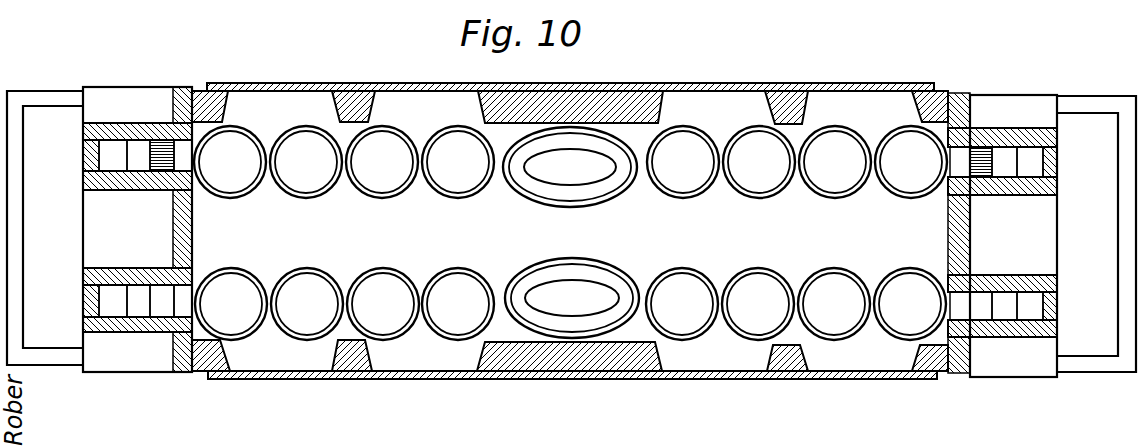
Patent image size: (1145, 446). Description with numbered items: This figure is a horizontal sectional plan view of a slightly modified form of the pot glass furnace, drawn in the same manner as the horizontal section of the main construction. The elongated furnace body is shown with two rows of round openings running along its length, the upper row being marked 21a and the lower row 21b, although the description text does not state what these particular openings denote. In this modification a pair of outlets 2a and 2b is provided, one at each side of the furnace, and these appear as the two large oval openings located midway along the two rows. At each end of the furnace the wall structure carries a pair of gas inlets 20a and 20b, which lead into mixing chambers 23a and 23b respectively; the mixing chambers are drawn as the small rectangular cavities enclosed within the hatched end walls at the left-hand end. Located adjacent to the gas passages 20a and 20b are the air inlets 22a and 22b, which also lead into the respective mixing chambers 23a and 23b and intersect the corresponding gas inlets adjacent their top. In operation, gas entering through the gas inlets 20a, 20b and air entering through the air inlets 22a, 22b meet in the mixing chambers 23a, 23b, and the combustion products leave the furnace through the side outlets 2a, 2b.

The outlet 2a is at (572, 298).
The outlet 2b is at (570, 167).
The gas inlet 20a is at (163, 142).
The gas inlet 20b is at (166, 293).
The upper row of tubes 21a is at (204, 188).
The lower row of tubes 21b is at (196, 268).
The air inlet 22a is at (117, 165).
The air inlet 22b is at (113, 312).
The mixing chamber 23a is at (113, 155).
The mixing chamber 23b is at (113, 301).